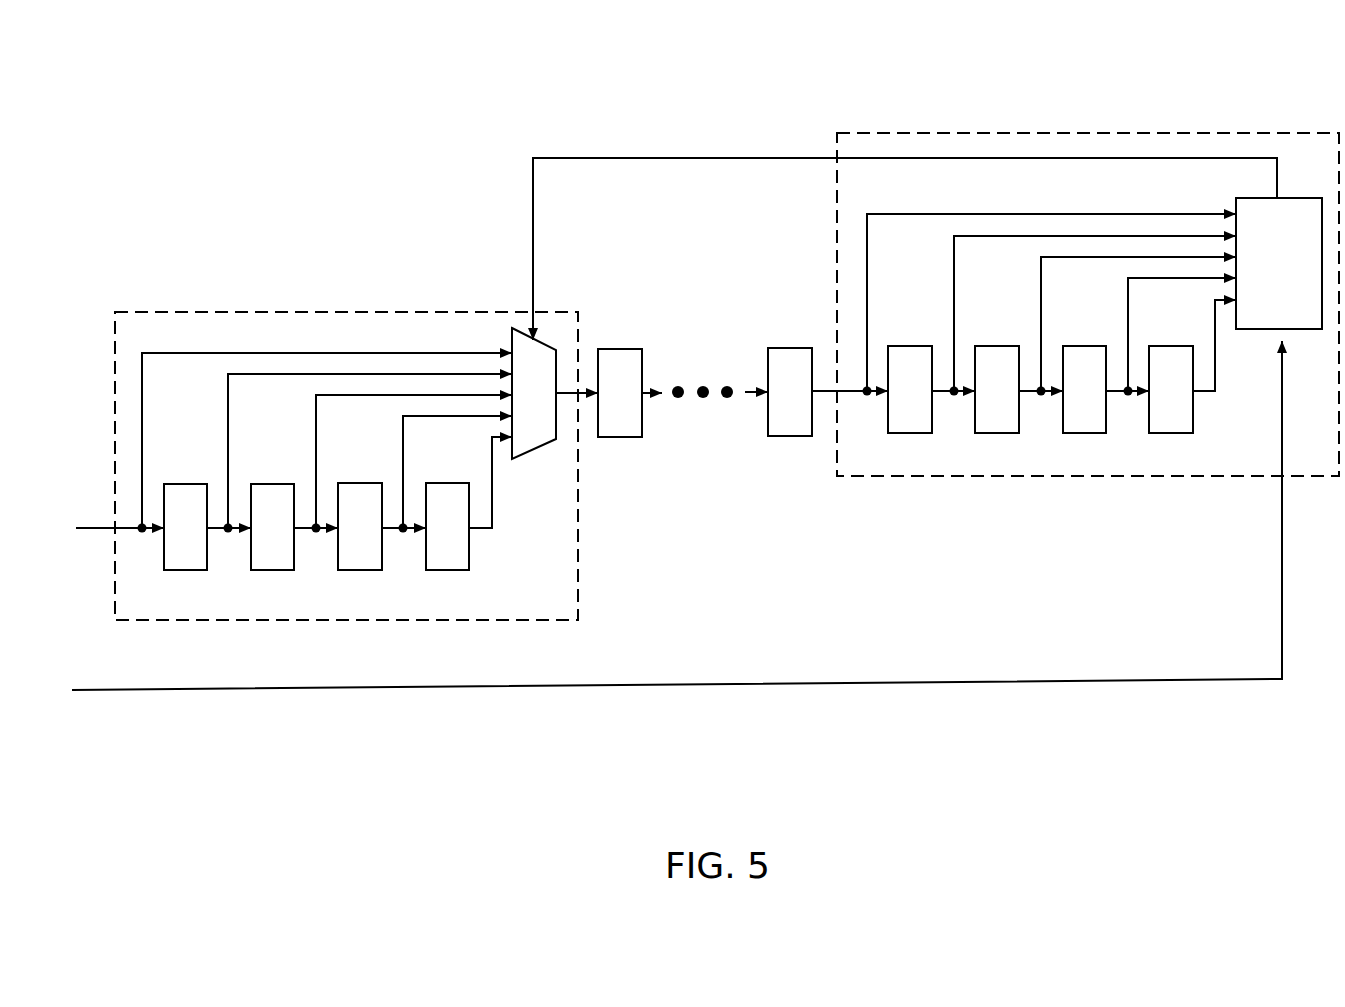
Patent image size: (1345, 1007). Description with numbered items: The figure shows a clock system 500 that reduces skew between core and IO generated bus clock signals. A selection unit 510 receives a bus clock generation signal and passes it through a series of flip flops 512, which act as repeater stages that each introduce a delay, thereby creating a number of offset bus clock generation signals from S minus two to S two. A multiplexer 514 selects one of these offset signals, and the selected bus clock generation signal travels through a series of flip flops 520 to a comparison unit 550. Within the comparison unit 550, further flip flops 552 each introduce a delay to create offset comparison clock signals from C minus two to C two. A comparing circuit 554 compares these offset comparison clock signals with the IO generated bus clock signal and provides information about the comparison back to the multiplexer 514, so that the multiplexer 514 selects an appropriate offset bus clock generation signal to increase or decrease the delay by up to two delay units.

The clock system 500 is at (620, 82).
The selection unit 510 is at (216, 311).
The flip flops 512 is at (447, 570).
The multiplexer 514 is at (534, 393).
The flip flops 520 is at (618, 437).
The comparison unit 550 is at (968, 132).
The flip flops 552 is at (905, 433).
The comparing circuit 554 is at (1279, 263).